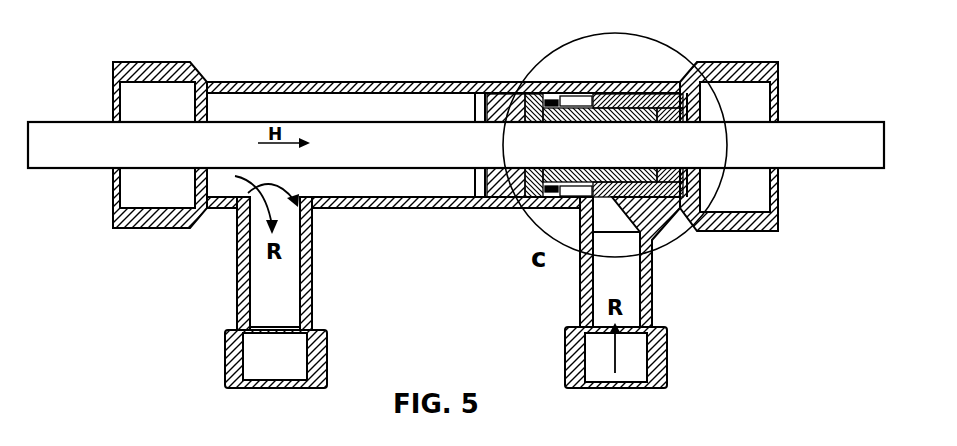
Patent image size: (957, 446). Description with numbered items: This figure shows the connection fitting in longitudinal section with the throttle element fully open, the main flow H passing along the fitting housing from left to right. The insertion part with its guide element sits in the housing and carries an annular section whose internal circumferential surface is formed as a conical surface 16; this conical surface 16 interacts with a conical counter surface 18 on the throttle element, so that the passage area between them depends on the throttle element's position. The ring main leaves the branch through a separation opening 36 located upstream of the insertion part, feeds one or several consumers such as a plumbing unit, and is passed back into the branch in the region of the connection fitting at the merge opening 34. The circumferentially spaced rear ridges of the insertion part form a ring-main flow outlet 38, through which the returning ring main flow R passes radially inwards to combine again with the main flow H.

The conical surface 16 is at (530, 95).
The conical counter surface 18 is at (515, 208).
The merge opening 34 is at (690, 176).
The separation opening 36 is at (308, 214).
The ring-main flow outlet 38 is at (650, 240).